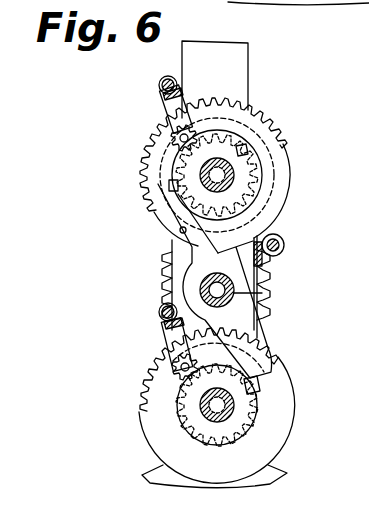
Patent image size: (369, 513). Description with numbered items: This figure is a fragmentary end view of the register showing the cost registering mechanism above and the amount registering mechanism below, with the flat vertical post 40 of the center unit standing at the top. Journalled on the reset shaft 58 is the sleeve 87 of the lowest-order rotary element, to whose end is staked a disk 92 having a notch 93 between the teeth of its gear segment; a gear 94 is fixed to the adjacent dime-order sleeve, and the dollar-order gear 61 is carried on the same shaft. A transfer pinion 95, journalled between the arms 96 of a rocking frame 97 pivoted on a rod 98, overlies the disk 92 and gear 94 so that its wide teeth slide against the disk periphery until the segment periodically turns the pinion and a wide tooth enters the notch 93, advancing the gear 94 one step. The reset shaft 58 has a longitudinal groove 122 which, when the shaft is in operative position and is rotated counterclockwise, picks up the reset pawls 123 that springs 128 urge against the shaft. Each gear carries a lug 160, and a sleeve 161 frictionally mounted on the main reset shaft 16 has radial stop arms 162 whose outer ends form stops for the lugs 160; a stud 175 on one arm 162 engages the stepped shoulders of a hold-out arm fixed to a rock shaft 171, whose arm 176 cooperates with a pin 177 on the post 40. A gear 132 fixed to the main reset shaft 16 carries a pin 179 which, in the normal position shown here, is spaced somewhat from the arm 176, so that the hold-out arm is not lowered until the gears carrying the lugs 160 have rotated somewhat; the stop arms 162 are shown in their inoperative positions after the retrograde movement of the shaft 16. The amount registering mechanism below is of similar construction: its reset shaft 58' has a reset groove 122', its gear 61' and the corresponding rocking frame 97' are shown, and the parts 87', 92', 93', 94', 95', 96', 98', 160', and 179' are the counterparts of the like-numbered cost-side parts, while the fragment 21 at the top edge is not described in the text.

The housing 21 is at (261, 0).
The flat vertical post 40 is at (215, 79).
The notch 93 is at (213, 143).
The springs 128 is at (268, 118).
The gear 61 is at (243, 195).
The pin 179 is at (218, 175).
The disk 92 is at (233, 175).
The gear 94 is at (237, 175).
The reset pawls 123 is at (255, 162).
The longitudinally extending groove 122 is at (262, 147).
The reset shaft 58 is at (173, 177).
The lug 160 is at (145, 197).
The sleeve 87 is at (172, 223).
The stop arms 162 is at (180, 232).
The sleeve 161 is at (220, 270).
The stud 175 is at (166, 262).
The main reset shaft 16 is at (275, 305).
The gear 132 is at (278, 283).
The arm 176 is at (280, 258).
The rock shaft 171 is at (285, 245).
The pin 177 is at (283, 230).
The rod 98 is at (167, 71).
The arms 96 is at (160, 109).
The rocking frame 97 is at (143, 89).
The transfer pinion 95 is at (157, 138).
The pin 98' is at (150, 309).
The rocking frame 97' is at (144, 328).
The link 96' is at (158, 345).
The pinion 95' is at (157, 367).
The gear 93' is at (227, 369).
The gear 61' is at (240, 422).
The block 160' is at (311, 372).
The ring 92' is at (232, 405).
The internal teeth 94' is at (217, 405).
The pitch circle 179' is at (218, 357).
The reset shaft 58' is at (190, 405).
The arm 87' is at (176, 433).
The reset groove 122' is at (272, 395).